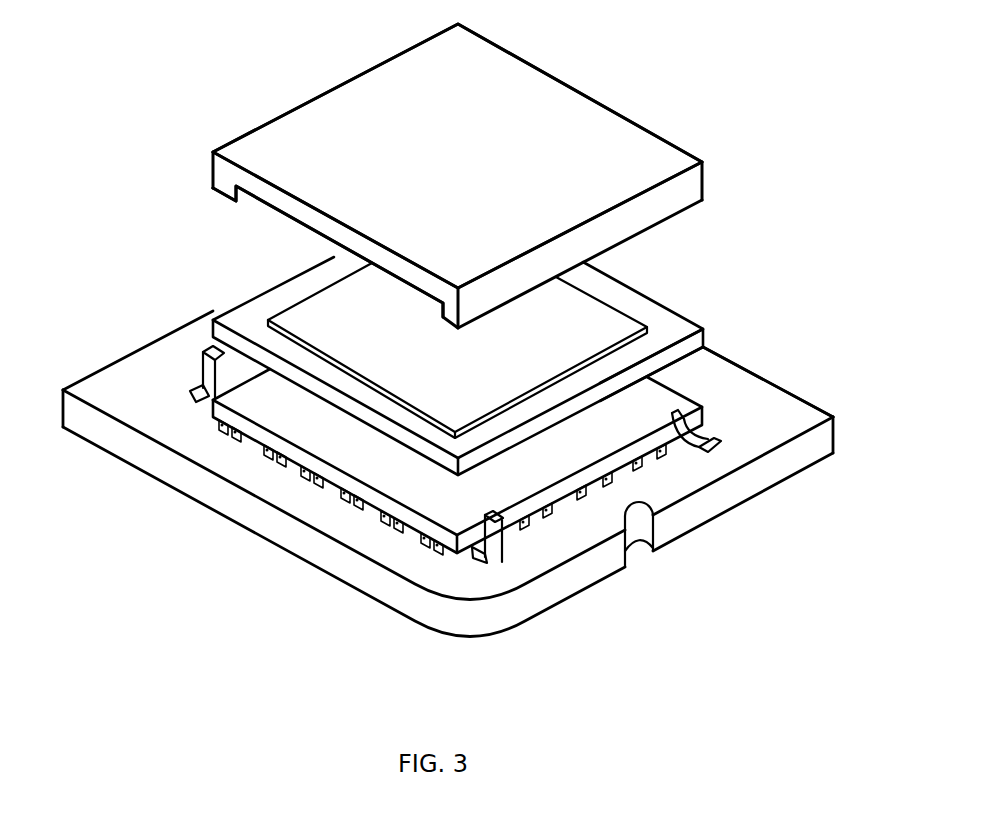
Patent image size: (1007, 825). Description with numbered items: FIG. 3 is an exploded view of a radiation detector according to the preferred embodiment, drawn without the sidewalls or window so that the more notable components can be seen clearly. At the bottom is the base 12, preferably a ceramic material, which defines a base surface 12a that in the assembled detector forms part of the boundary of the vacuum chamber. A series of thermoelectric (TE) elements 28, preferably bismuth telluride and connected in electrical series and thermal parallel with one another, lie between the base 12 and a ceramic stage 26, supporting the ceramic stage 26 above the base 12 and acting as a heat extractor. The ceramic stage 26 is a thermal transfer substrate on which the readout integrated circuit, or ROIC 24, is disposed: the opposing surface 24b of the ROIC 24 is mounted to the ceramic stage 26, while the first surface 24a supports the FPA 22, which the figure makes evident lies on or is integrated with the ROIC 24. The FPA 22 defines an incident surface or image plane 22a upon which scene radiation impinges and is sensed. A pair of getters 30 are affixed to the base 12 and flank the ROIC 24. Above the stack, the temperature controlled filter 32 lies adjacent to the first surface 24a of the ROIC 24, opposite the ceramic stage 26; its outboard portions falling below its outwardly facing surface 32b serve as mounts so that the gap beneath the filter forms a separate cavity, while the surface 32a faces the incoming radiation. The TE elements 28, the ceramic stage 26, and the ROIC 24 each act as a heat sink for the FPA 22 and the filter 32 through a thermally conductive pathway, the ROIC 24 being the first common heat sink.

The base 12 is at (250, 510).
The base surface 12a is at (790, 417).
The FPA 22 is at (570, 310).
The incident surface or image plane 22a is at (326, 323).
The readout integrated circuit (ROIC) 24 is at (213, 320).
The first surface of the ROIC 24a is at (671, 314).
The opposing surface of the ROIC 24b is at (698, 356).
The ceramic stage 26 is at (450, 518).
The thermoelectric (TE) elements 28 is at (380, 520).
The getters 30 is at (205, 372).
The temperature controlled filter 32 is at (343, 107).
The top surface of lid 32a is at (522, 67).
The outwardly facing surface of the filter 32b is at (268, 205).